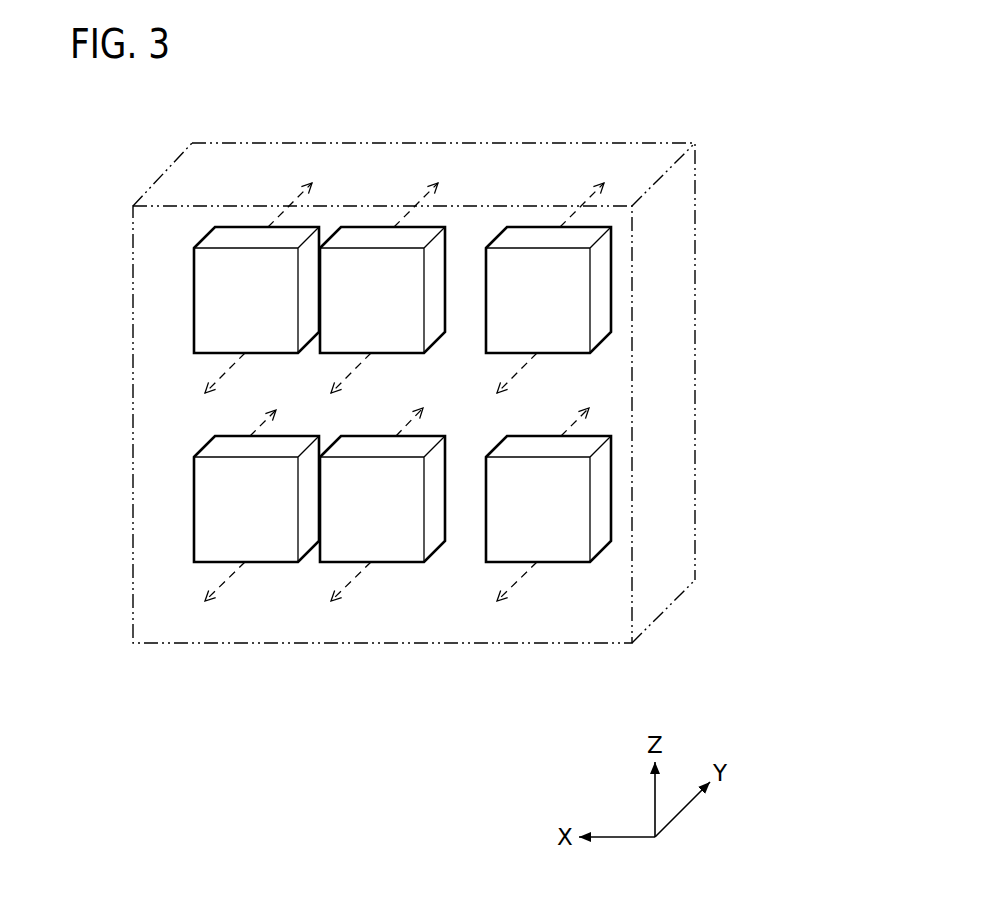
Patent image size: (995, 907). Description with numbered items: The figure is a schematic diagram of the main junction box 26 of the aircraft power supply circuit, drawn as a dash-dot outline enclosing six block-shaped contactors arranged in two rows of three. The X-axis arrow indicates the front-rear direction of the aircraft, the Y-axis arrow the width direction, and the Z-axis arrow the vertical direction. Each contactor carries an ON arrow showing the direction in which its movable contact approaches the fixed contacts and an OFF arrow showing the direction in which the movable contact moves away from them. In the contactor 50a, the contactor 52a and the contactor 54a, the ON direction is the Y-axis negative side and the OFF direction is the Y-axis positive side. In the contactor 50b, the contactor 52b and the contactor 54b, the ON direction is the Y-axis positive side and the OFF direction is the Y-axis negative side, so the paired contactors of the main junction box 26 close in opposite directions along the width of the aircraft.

The main junction box 26 is at (638, 143).
The contactor 50a is at (533, 237).
The contactor 50b is at (563, 550).
The contactor 52a is at (247, 237).
The contactor 52b is at (377, 237).
The contactor 54a is at (270, 550).
The contactor 54b is at (397, 550).